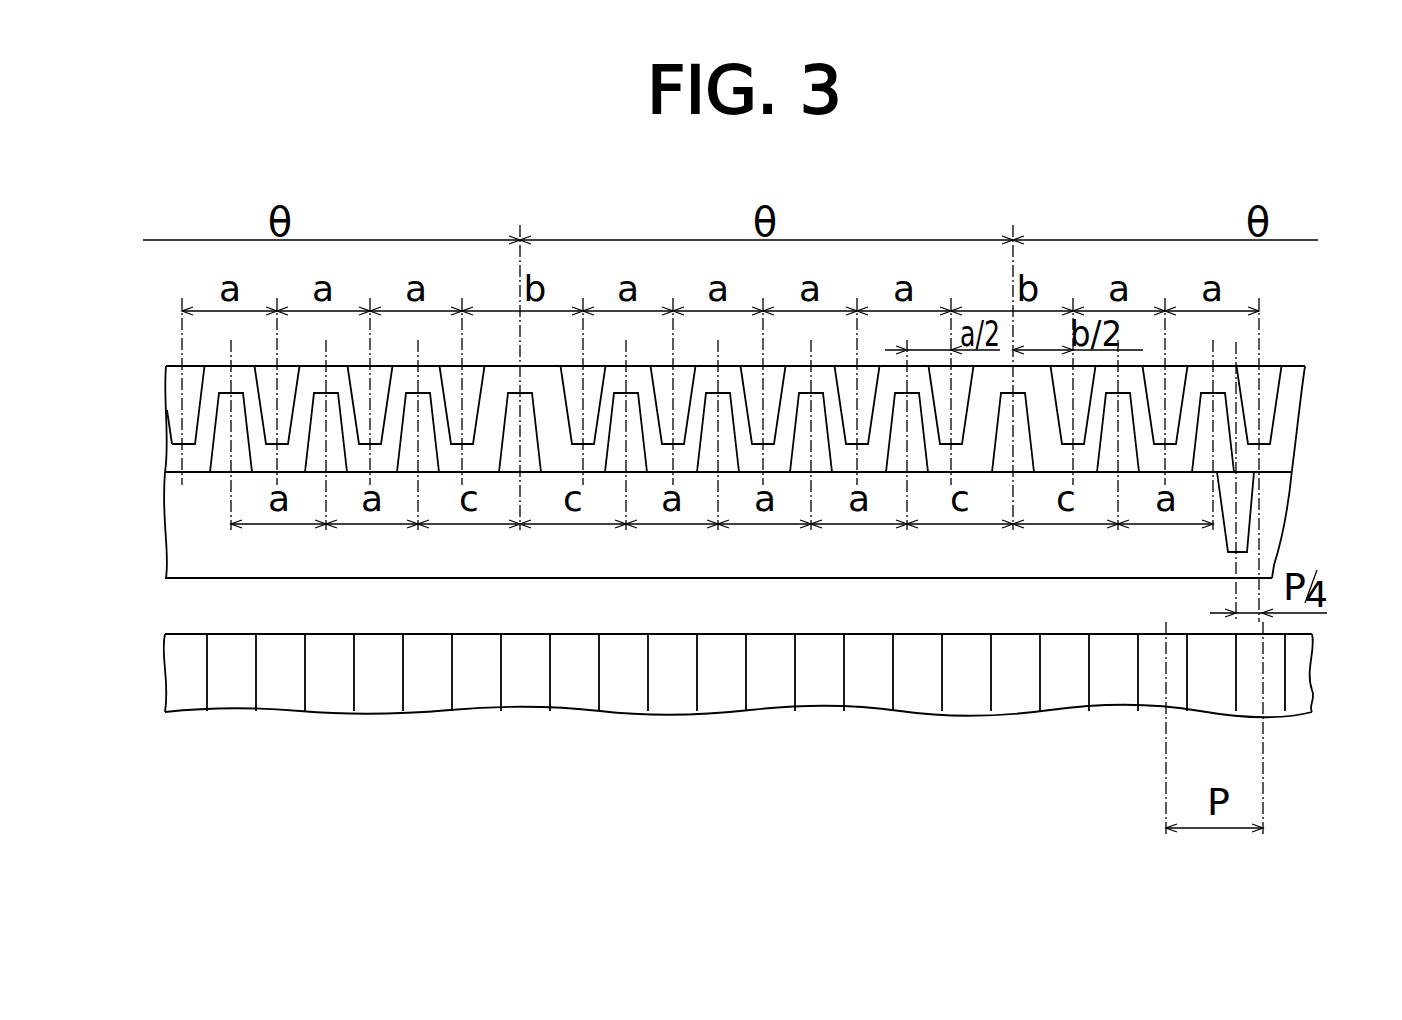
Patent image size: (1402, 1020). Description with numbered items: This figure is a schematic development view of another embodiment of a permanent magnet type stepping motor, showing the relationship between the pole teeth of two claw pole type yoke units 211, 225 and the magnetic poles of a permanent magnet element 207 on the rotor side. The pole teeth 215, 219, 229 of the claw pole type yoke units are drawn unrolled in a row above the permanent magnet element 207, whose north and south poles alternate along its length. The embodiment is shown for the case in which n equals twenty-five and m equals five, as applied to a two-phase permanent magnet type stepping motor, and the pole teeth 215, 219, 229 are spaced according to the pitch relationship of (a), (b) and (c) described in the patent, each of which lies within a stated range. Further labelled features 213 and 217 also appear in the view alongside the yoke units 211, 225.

The permanent magnet element 207 is at (1298, 688).
The claw pole type yoke unit 211 is at (1298, 426).
The stator core 213 is at (775, 431).
The pole teeth 215 is at (178, 392).
The slot / tooth root line 217 is at (1238, 462).
The pole teeth 219 is at (225, 453).
The claw pole type yoke unit 225 is at (1288, 532).
The pole teeth 229 is at (1242, 498).